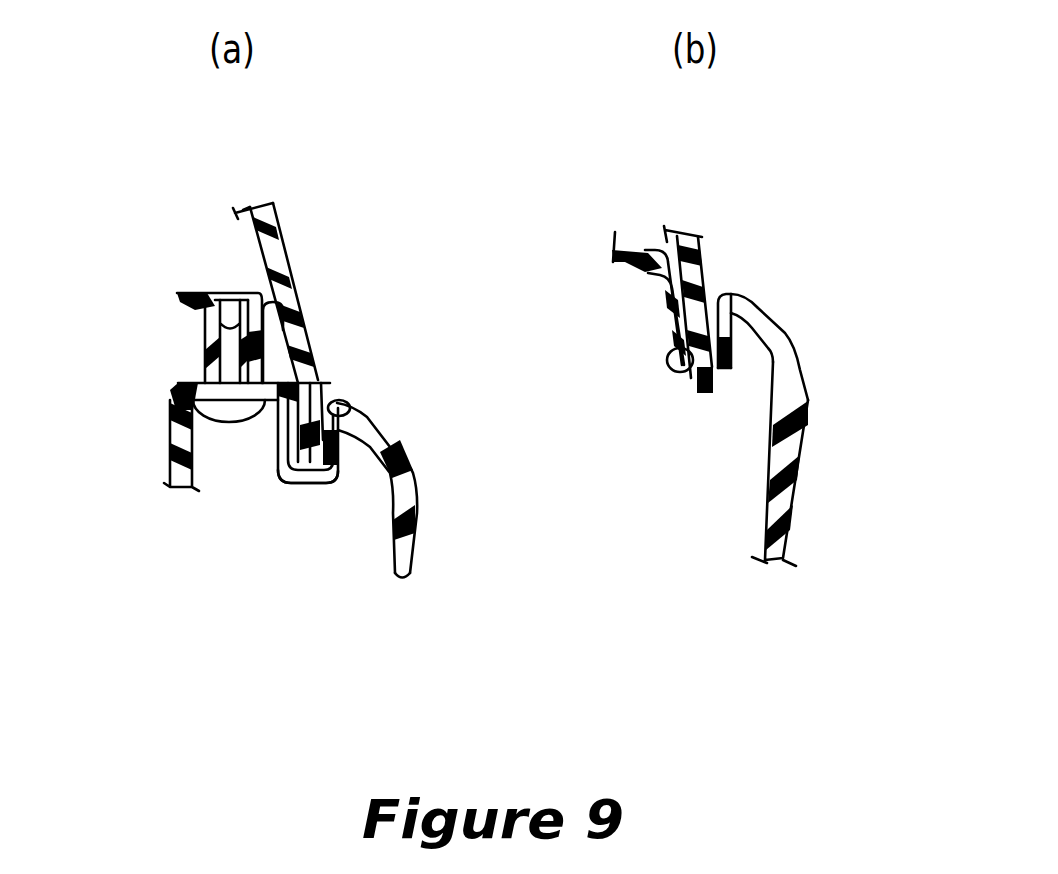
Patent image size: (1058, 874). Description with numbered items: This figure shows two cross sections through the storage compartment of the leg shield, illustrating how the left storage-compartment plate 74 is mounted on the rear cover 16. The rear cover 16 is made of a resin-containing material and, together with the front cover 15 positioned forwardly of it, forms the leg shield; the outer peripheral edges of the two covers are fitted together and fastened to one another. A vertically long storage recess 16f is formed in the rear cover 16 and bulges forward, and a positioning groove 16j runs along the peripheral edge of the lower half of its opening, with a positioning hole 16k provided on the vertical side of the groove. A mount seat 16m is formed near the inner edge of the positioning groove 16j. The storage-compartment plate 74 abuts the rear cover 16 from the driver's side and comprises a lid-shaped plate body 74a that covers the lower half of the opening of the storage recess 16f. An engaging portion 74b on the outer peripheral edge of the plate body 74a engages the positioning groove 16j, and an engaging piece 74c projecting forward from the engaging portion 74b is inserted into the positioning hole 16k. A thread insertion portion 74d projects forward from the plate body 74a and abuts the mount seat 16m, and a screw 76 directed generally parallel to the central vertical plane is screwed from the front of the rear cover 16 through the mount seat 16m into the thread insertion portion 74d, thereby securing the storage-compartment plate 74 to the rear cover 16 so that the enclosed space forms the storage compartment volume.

The storage-compartment plate 74 is at (297, 280).
The plate body 74a is at (295, 217).
The engaging portion 74b is at (350, 408).
The engaging piece 74c is at (713, 386).
The thread insertion portion 74d is at (198, 333).
The screw 76 is at (237, 423).
The rear cover 16 is at (430, 467).
The left storage recess 16f is at (168, 432).
The positioning groove 16j is at (303, 484).
The positioning hole 16k is at (690, 368).
The mount seat 16m is at (180, 386).
The front cover 15 is at (813, 484).